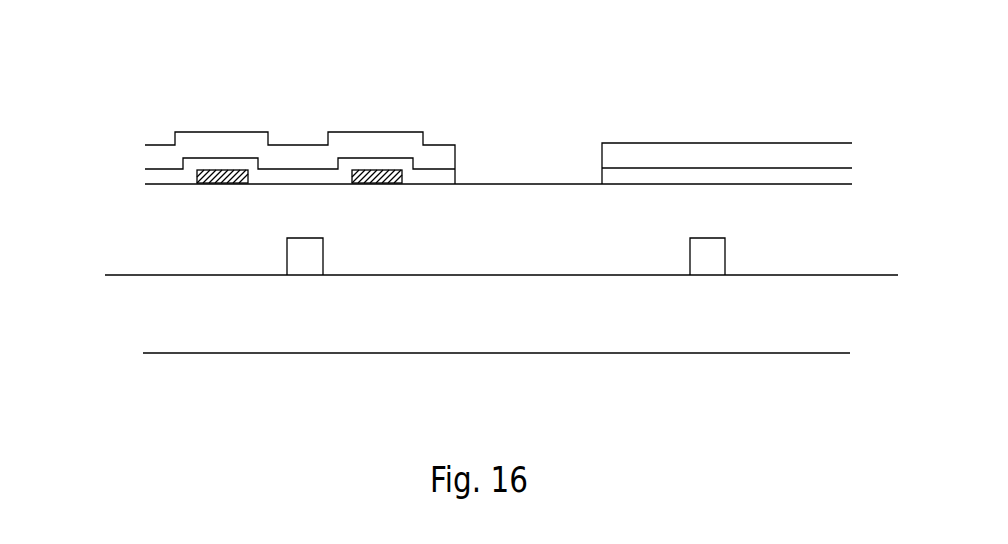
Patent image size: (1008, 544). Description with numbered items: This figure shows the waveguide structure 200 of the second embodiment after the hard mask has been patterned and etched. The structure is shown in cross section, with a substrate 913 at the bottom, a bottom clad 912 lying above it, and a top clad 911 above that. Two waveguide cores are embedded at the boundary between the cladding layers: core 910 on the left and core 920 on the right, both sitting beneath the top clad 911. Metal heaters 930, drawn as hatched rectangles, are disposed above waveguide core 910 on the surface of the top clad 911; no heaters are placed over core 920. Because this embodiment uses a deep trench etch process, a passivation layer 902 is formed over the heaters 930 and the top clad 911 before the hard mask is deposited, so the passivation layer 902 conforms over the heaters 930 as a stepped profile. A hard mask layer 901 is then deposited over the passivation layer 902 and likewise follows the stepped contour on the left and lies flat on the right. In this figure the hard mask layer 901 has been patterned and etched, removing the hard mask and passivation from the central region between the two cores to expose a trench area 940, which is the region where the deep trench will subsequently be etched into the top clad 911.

The waveguide structure 200 is at (525, 30).
The hard mask layer 901 is at (253, 128).
The passivation layer 902 is at (141, 177).
The core 910 is at (284, 258).
The top clad 911 is at (501, 229).
The bottom clad 912 is at (496, 338).
The substrate 913 is at (496, 373).
The core 920 is at (729, 253).
The metal heaters 930 is at (208, 188).
The trench area 940 is at (523, 164).